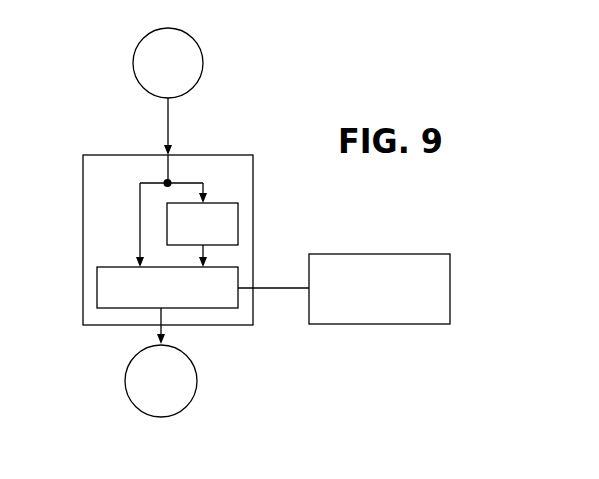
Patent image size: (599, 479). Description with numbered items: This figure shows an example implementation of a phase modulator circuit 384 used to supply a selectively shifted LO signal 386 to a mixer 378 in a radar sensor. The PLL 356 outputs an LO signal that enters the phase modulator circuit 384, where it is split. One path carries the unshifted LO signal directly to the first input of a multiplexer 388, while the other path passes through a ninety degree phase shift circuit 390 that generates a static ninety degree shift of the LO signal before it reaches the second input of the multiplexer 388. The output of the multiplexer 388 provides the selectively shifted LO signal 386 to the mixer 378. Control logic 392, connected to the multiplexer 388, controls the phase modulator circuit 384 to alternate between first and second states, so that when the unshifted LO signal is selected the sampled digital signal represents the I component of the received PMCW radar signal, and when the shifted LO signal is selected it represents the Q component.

The PLL 356 is at (136, 56).
The phase modulator circuit 384 is at (127, 155).
The 90 degree phase shift circuit 390 is at (238, 217).
The multiplexer 388 is at (97, 278).
The control logic 392 is at (450, 283).
The selectively shifted LO signal 386 is at (157, 333).
The mixer 378 is at (125, 380).